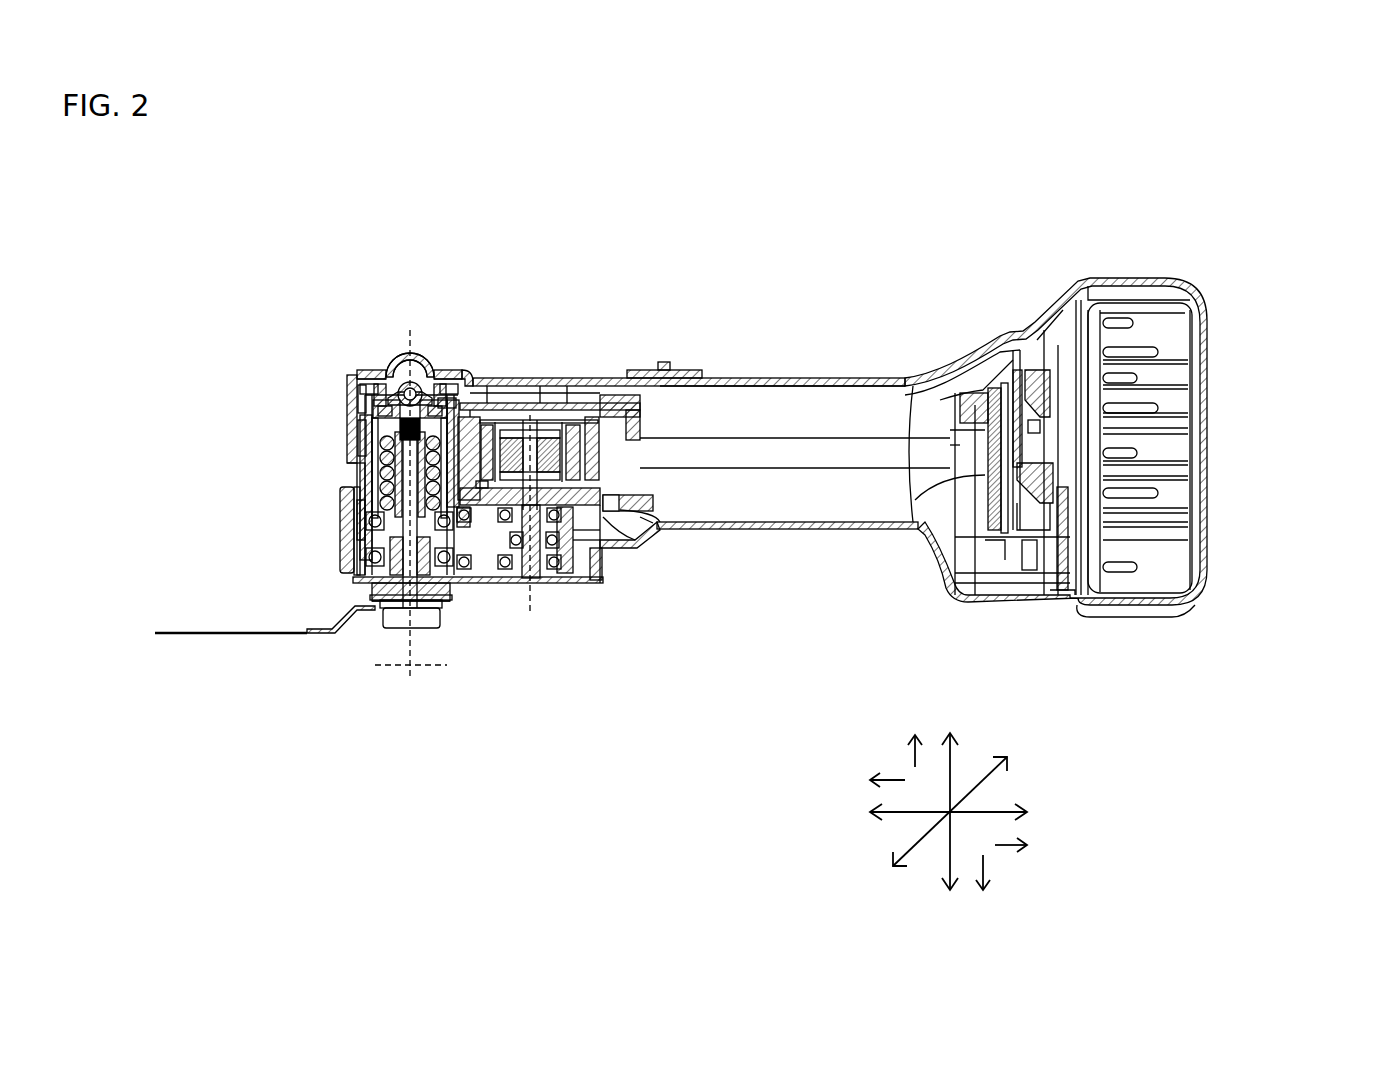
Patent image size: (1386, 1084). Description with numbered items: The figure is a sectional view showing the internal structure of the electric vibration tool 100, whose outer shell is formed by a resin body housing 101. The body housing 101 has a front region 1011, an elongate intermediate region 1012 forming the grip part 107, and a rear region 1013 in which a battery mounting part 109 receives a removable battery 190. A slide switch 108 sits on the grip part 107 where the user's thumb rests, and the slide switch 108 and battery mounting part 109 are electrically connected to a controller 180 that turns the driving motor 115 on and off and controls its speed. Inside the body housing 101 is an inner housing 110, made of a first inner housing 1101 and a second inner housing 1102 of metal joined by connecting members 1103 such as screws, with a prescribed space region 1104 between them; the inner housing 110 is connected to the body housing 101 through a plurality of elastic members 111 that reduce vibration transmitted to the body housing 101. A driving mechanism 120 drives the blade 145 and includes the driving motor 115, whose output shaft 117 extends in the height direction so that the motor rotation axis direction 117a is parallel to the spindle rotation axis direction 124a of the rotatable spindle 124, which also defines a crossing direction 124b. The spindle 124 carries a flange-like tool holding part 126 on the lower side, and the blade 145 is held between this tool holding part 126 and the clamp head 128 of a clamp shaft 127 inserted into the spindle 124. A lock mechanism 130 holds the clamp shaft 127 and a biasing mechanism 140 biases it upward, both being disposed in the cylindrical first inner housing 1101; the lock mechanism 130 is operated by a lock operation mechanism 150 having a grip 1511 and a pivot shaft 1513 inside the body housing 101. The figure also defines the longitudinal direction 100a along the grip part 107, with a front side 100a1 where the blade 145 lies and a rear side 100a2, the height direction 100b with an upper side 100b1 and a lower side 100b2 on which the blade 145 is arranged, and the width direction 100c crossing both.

The electric vibration tool 100 is at (320, 330).
The body housing 101 is at (370, 378).
The grip part 107 is at (782, 532).
The slide switch 108 is at (665, 370).
The battery mounting part 109 is at (1060, 563).
The inner housing 110 is at (360, 417).
The elastic member 111 is at (535, 400).
The driving motor 115 is at (548, 425).
The output shaft 117 is at (643, 545).
The motor rotation axis direction 117a is at (530, 610).
The driving mechanism 120 is at (603, 560).
The spindle 124 is at (350, 588).
The spindle rotation axis direction 124a is at (410, 640).
The crossing direction 124b is at (393, 667).
The tool holding part 126 is at (453, 607).
The clamp shaft 127 is at (340, 540).
The clamp head 128 is at (430, 622).
The lock mechanism 130 is at (357, 449).
The biasing mechanism 140 is at (360, 465).
The blade 145 is at (230, 636).
The lock operation mechanism 150 is at (402, 350).
The controller 180 is at (990, 470).
The battery 190 is at (1173, 570).
The front region 1011 is at (437, 342).
The intermediate region 1012 is at (805, 358).
The rear region 1013 is at (1037, 272).
The first inner housing 1101 is at (355, 432).
The second inner housing 1102 is at (450, 395).
The connecting member 1103 is at (356, 372).
The space region 1104 is at (425, 385).
The grip 1511 is at (337, 558).
The pivot shaft 1513 is at (380, 385).
The longitudinal direction 100a is at (900, 815).
The front side 100a1 is at (900, 778).
The rear side 100a2 is at (1000, 848).
The height direction 100b is at (952, 768).
The upper side 100b1 is at (912, 758).
The lower side 100b2 is at (990, 866).
The width direction 100c is at (923, 838).